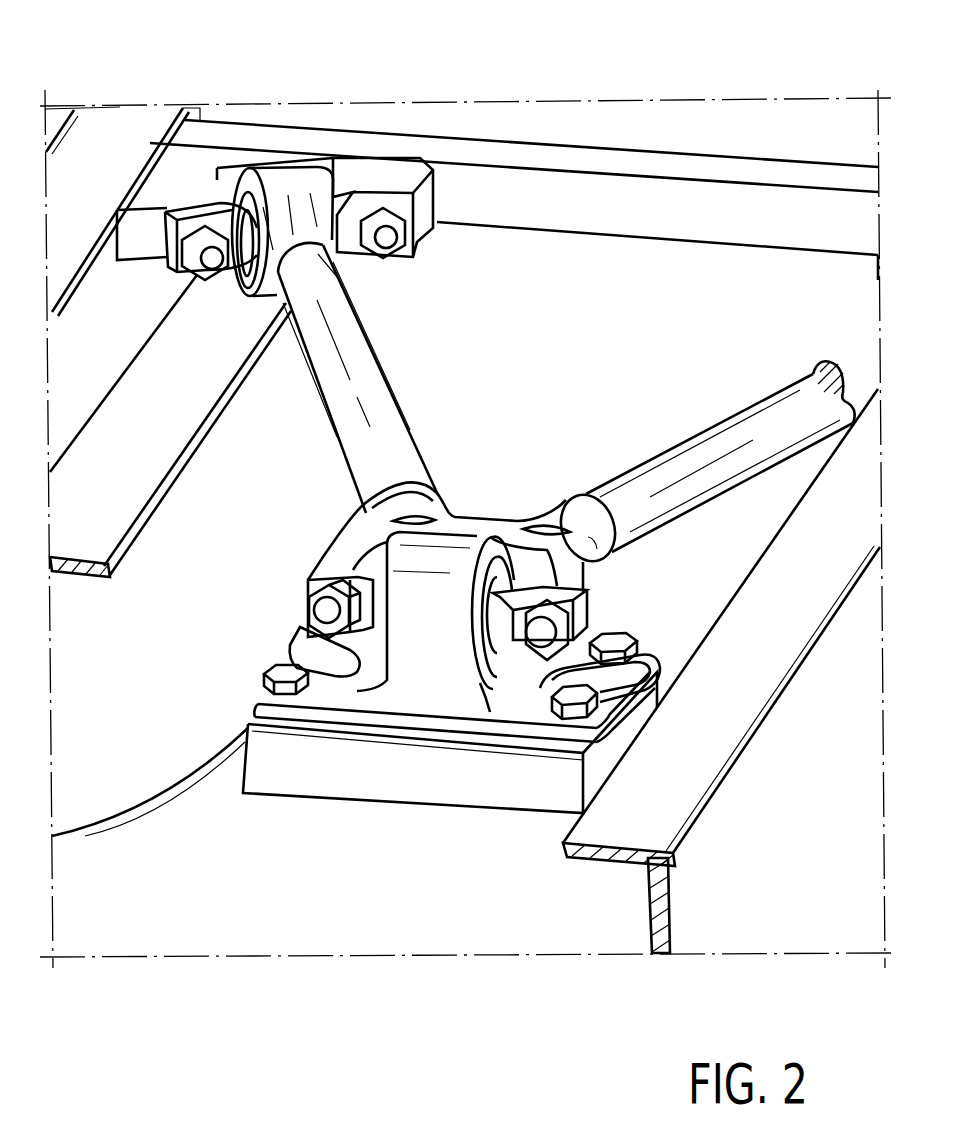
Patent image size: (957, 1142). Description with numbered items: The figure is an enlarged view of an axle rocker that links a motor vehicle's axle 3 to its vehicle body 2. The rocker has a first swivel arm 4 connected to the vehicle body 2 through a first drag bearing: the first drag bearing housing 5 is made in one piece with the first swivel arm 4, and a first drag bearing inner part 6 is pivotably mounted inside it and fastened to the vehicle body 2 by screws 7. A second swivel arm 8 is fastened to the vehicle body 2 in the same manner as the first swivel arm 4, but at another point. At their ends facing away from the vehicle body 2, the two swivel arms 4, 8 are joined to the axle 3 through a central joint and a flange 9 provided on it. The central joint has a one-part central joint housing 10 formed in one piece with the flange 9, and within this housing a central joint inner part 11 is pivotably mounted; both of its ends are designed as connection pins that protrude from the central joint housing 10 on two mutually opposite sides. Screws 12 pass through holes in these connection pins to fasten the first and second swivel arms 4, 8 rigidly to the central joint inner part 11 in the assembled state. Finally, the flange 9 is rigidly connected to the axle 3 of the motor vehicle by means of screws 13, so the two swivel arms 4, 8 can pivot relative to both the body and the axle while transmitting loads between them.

The vehicle body 2 is at (130, 500).
The axle 3 is at (392, 777).
The first swivel arm 4 is at (372, 413).
The first drag bearing housing 5 is at (293, 183).
The first drag bearing inner part 6 is at (186, 245).
The screws 7 is at (202, 240).
The second swivel arm 8 is at (766, 425).
The flange 9 is at (513, 715).
The central joint housing 10 is at (453, 556).
The central joint inner part 11 is at (317, 582).
The screws 12 is at (329, 612).
The screws 13 is at (293, 628).